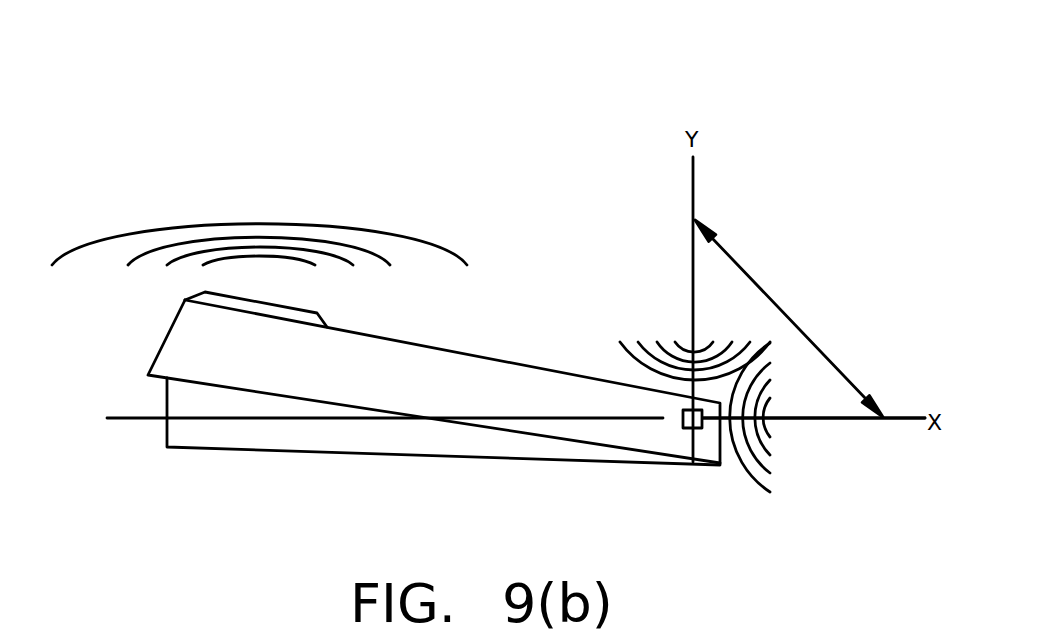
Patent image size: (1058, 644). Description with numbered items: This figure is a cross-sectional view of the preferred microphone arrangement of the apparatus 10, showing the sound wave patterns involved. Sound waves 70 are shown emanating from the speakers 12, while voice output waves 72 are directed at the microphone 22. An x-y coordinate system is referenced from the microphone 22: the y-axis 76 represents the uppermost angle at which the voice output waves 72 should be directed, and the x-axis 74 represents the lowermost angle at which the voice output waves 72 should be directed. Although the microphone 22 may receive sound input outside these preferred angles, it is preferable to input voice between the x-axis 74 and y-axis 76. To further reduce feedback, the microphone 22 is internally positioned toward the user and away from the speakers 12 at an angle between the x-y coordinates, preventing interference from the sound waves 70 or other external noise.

The ultrasonic diagnostic apparatus 10 is at (478, 177).
The speakers 12 is at (197, 293).
The microphone 22 is at (693, 462).
The sound waves 70 is at (175, 243).
The voice output waves 72 is at (684, 337).
The x-axis 74 is at (902, 418).
The y-axis 76 is at (695, 190).